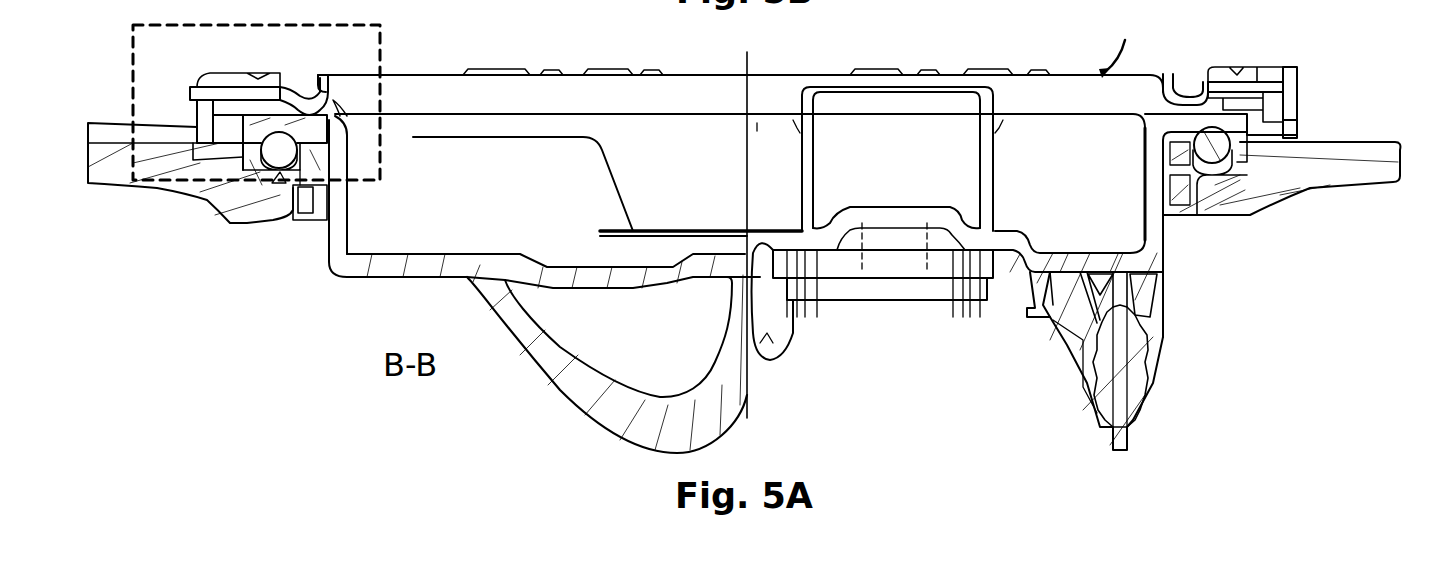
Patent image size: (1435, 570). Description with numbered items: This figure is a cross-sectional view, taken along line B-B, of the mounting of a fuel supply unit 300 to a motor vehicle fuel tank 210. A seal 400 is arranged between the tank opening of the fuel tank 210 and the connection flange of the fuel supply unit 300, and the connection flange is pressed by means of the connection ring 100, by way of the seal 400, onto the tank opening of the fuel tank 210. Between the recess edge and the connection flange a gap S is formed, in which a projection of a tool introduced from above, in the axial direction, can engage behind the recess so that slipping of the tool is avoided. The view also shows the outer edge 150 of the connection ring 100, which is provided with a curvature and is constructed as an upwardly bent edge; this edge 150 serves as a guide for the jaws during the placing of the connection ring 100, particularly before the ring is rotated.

The connection ring 100 is at (400, 97).
The outer edge 150 is at (1217, 113).
The fuel tank 210 is at (247, 200).
The fuel supply unit 300 is at (475, 201).
The seal 400 is at (1223, 142).
The gap S is at (193, 103).